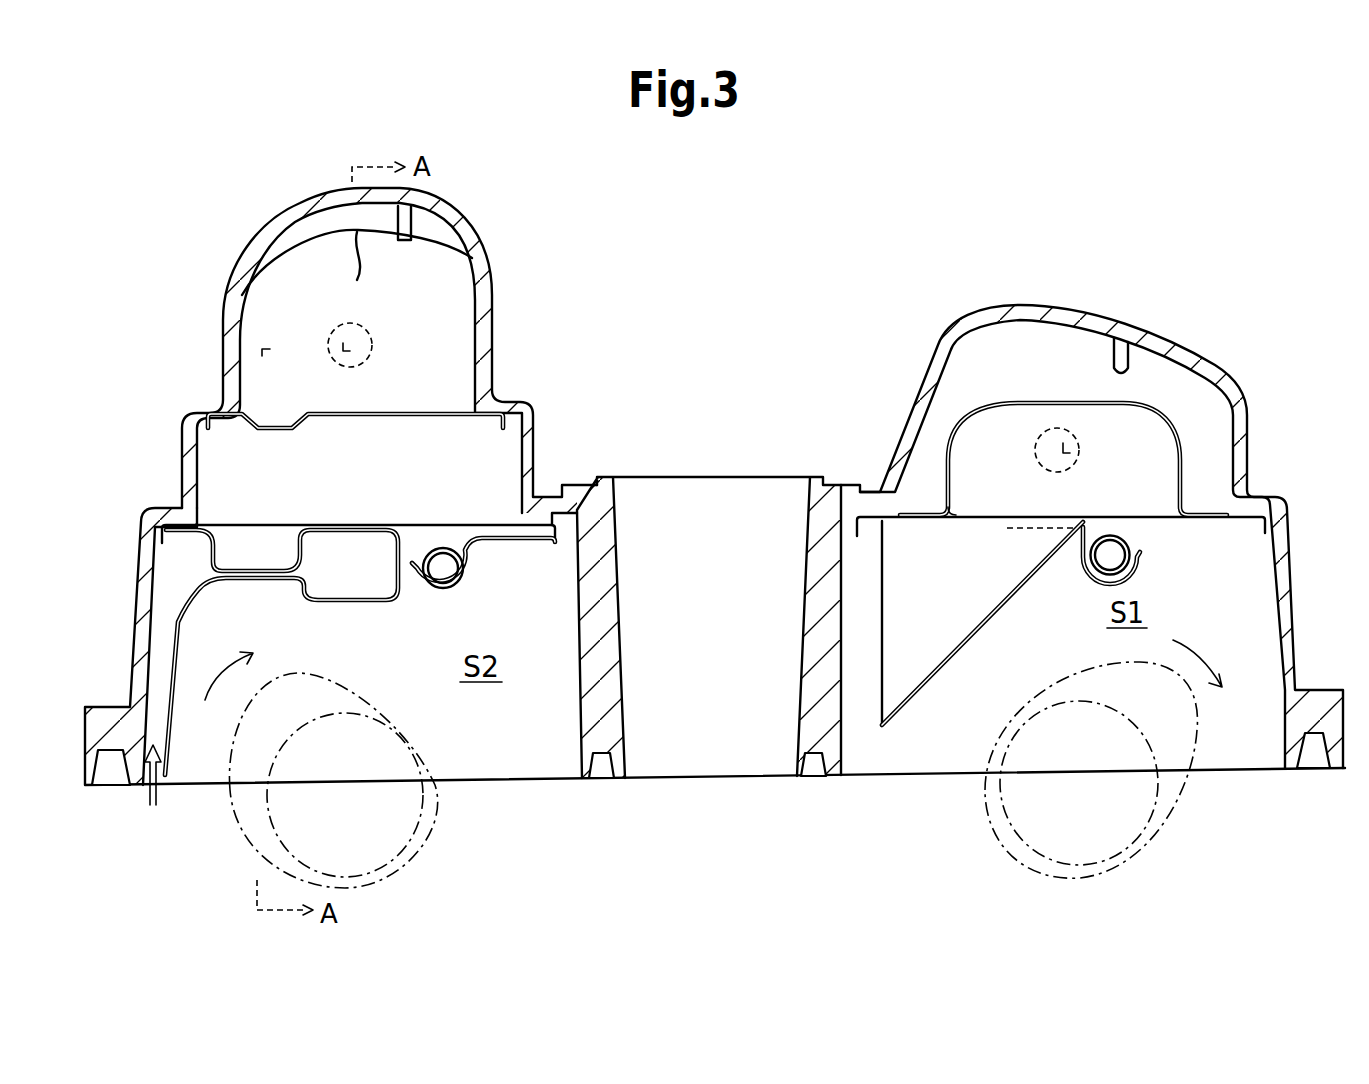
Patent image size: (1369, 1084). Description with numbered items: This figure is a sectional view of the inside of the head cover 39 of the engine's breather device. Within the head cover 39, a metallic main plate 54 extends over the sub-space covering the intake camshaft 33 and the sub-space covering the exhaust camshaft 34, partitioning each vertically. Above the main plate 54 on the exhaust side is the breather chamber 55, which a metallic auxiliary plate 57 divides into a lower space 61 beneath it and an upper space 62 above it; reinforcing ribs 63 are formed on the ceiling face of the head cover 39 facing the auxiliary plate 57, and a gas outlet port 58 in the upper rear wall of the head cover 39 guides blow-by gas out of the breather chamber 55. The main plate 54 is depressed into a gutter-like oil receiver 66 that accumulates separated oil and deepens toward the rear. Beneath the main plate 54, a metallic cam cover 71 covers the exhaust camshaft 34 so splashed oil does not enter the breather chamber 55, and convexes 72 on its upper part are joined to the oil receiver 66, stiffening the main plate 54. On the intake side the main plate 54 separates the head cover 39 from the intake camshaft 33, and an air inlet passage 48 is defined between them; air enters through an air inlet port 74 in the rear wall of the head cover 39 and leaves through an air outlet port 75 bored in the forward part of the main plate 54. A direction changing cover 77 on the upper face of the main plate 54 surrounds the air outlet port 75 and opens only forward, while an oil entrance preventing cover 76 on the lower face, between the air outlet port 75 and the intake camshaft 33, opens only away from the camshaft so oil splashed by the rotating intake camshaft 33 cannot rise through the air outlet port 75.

The intake camshaft 33 is at (997, 810).
The exhaust camshaft 34 is at (410, 840).
The head cover 39 is at (490, 357).
The air inlet passage 48 is at (1112, 506).
The main plate 54 is at (370, 525).
The breather chamber 55 is at (715, 507).
The auxiliary plate 57 is at (393, 410).
The gas outlet port 58 is at (372, 348).
The lower space 61 is at (715, 608).
The upper space 62 is at (243, 377).
The reinforcing ribs 63 is at (362, 273).
The oil receiver 66 is at (283, 625).
The cam cover 71 is at (283, 652).
The convexes 72 is at (283, 652).
The air inlet port 74 is at (1075, 452).
The air outlet port 75 is at (957, 513).
The oil entrance preventing cover 76 is at (978, 630).
The direction changing cover 77 is at (1063, 401).